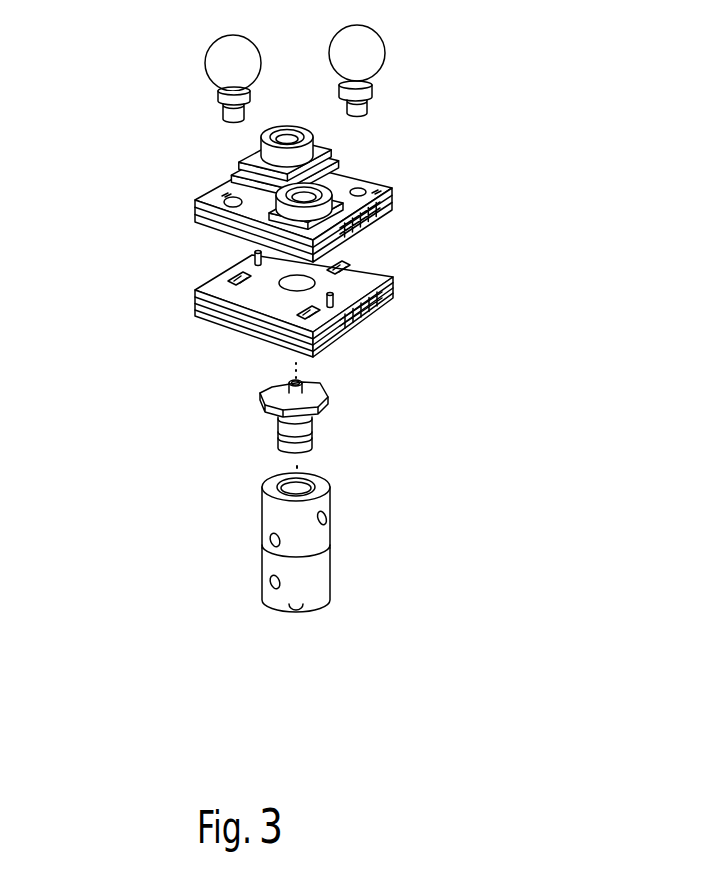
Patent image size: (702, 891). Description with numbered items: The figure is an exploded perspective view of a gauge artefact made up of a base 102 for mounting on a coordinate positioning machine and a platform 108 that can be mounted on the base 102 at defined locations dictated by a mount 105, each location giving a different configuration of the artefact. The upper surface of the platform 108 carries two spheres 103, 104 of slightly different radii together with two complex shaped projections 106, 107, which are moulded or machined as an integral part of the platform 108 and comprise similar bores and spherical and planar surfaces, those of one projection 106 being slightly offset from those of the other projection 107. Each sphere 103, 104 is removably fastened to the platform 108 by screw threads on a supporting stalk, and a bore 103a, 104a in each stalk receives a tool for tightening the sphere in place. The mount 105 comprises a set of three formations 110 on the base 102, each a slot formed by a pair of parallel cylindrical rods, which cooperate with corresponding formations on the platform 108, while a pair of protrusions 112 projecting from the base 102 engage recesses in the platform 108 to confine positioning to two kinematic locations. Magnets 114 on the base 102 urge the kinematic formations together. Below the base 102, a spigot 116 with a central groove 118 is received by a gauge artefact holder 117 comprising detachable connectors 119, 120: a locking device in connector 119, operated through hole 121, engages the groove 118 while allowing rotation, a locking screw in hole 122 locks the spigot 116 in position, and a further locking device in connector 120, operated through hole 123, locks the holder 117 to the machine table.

The base 102 is at (393, 287).
The sphere 103 is at (385, 40).
The bore 103a is at (363, 93).
The sphere 104 is at (206, 60).
The bore 104a is at (220, 107).
The mount 105 is at (382, 239).
The projection 106 is at (197, 217).
The projection 107 is at (237, 153).
The platform 108 is at (388, 187).
The formations 110 is at (236, 276).
The protrusions 112 is at (250, 258).
The magnets 114 is at (277, 297).
The spigot 116 is at (330, 399).
The gauge artefact holder 117 is at (310, 532).
The central groove 118 is at (313, 428).
The connector 119 is at (331, 493).
The connector 120 is at (333, 566).
The hole 121 is at (270, 540).
The hole 122 is at (327, 516).
The hole 123 is at (271, 586).